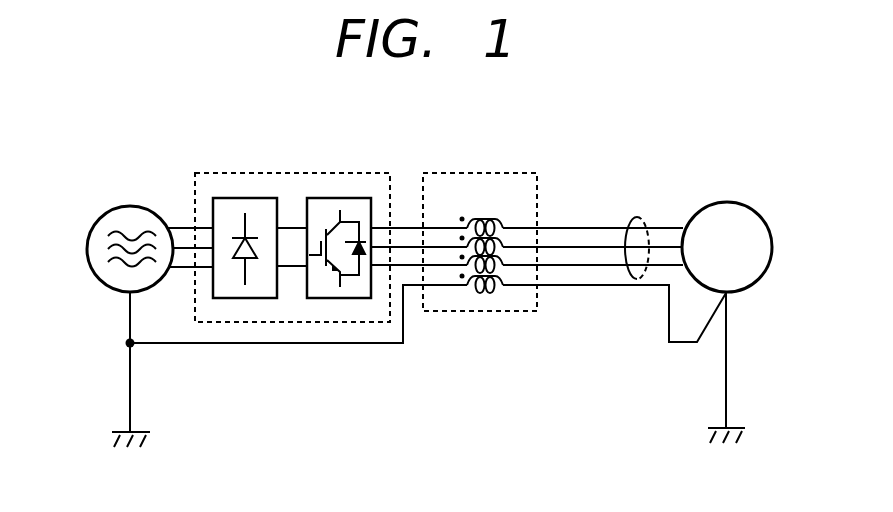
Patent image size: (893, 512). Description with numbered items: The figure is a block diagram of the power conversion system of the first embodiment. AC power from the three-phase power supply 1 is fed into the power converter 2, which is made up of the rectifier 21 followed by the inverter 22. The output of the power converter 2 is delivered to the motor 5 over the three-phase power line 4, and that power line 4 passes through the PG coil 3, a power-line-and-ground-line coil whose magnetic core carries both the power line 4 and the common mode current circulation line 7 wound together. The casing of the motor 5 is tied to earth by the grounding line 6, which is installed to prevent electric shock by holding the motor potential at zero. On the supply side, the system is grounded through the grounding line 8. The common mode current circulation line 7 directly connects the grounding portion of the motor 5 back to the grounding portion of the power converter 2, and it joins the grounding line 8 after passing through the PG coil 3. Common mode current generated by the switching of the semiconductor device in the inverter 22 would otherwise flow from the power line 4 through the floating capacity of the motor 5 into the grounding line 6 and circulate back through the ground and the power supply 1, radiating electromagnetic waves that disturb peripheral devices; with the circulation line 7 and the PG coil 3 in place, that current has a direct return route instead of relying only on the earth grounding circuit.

The three-phase power supply 1 is at (130, 207).
The power converter 2 is at (340, 171).
The PG coil 3 is at (487, 171).
The three-phase power line 4 is at (637, 217).
The motor 5 is at (727, 202).
The grounding line 6 is at (727, 368).
The common mode current circulation line 7 is at (603, 287).
The grounding line 8 is at (130, 313).
The rectifier 21 is at (245, 298).
The inverter 22 is at (340, 298).